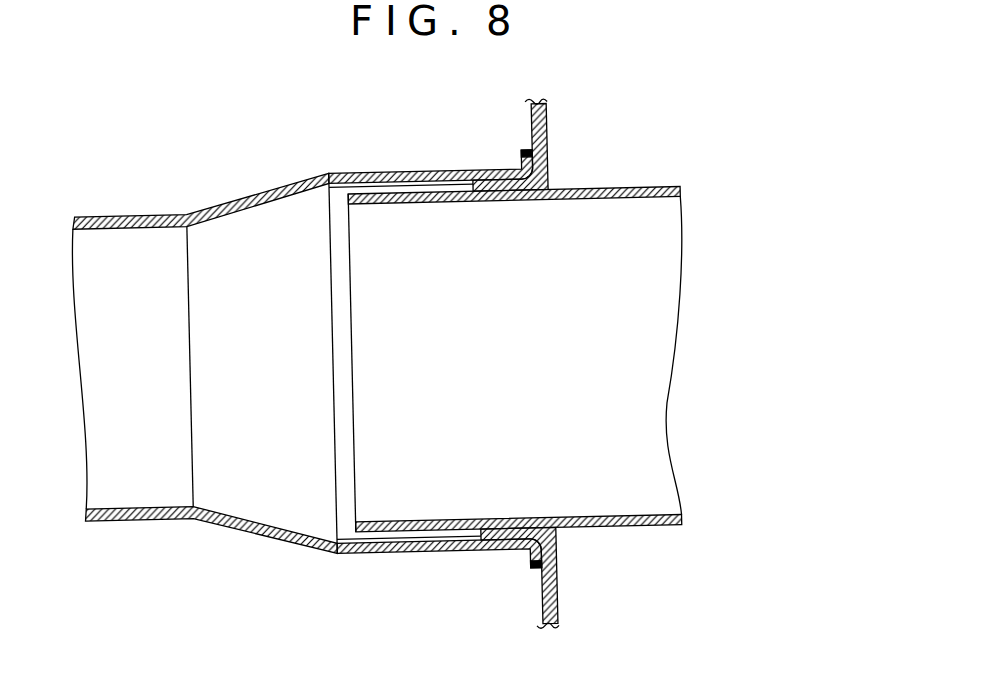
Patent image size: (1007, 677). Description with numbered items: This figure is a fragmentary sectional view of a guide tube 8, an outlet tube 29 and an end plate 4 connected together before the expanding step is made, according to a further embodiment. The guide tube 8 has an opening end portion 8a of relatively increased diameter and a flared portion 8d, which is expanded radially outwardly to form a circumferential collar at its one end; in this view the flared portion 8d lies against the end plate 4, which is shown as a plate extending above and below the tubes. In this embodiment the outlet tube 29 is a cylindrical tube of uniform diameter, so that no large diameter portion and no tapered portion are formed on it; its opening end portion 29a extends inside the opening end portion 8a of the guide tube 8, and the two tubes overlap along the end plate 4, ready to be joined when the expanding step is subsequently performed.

The guide tube 8 is at (268, 186).
The opening end portion 8a is at (410, 172).
The flared portion 8d is at (524, 152).
The end plate 4 is at (556, 125).
The outlet tube 29 is at (603, 182).
The opening end portion 29a is at (383, 533).